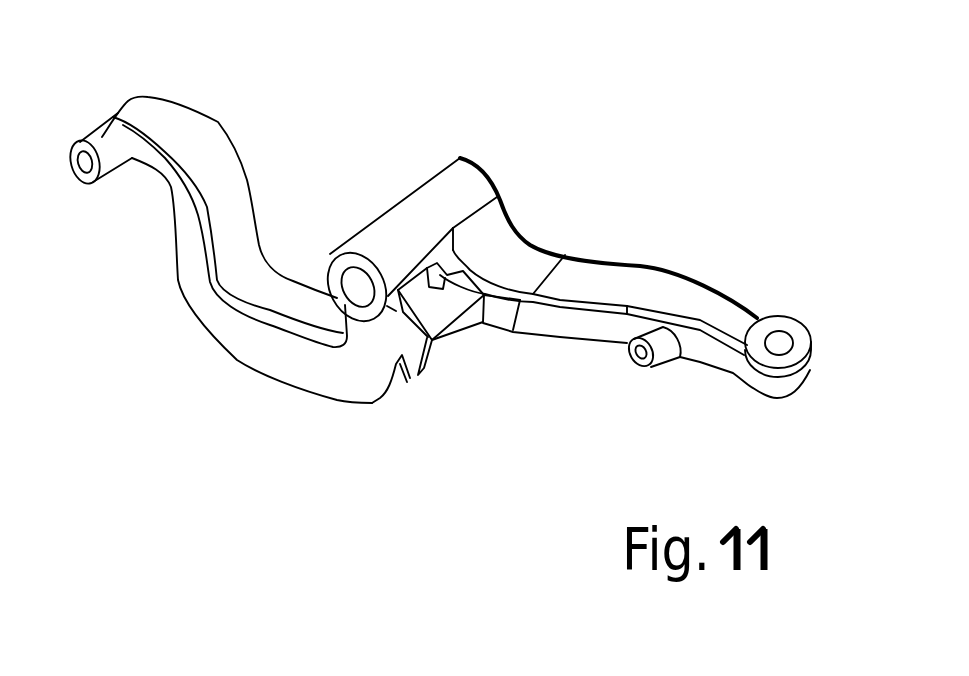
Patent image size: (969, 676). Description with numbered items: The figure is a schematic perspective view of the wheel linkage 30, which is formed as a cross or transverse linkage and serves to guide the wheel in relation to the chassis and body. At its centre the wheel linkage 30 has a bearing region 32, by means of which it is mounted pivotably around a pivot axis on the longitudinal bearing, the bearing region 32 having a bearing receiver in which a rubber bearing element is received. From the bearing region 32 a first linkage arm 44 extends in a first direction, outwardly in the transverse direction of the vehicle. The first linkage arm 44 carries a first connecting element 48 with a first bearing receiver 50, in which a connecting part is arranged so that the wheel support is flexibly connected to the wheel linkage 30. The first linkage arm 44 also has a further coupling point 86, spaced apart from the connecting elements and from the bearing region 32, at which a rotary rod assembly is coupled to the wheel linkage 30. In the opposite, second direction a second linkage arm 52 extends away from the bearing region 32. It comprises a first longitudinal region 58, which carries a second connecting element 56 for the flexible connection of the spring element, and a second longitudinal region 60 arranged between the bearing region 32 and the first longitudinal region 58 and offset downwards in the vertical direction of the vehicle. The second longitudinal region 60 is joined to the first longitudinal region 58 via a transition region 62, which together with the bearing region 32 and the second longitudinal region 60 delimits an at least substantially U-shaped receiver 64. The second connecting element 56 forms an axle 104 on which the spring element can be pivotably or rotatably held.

The axle 104 is at (88, 135).
The second connecting element 56 is at (110, 178).
The first longitudinal region 58 is at (150, 97).
The second linkage arm 52 is at (211, 119).
The transition region 62 is at (197, 257).
The second longitudinal region 60 is at (334, 362).
The U-shaped receiver 64 is at (301, 239).
The bearing region 32 is at (459, 158).
The wheel linkage 30 is at (511, 216).
The first linkage arm 44 is at (648, 260).
The first connecting element 48 is at (811, 324).
The first bearing receiver 50 is at (780, 350).
The coupling point 86 is at (654, 378).